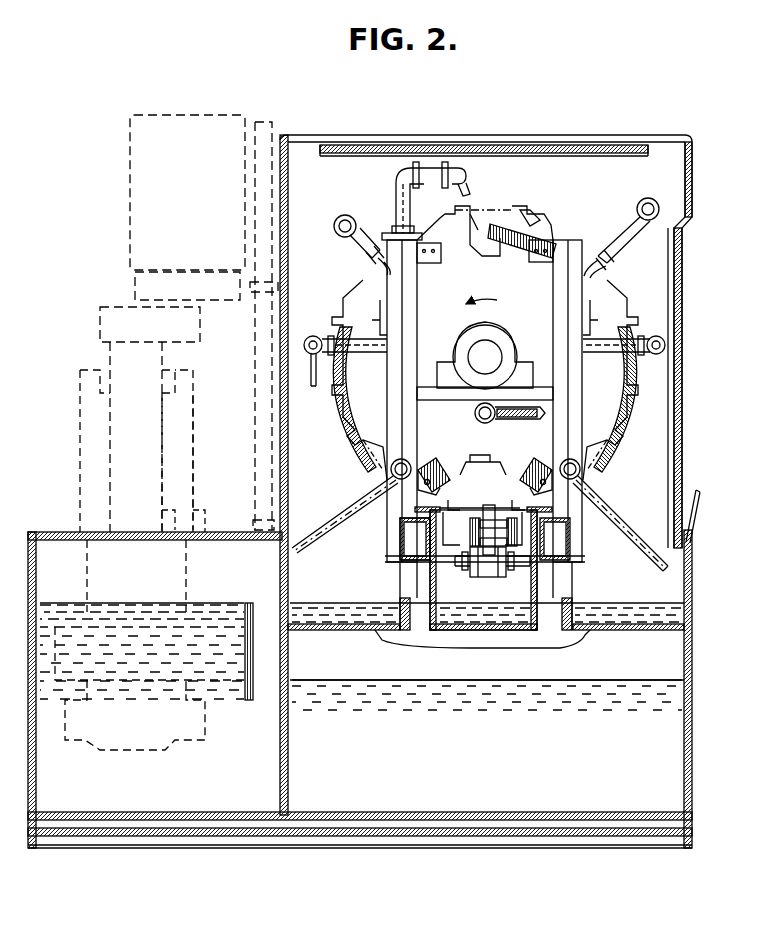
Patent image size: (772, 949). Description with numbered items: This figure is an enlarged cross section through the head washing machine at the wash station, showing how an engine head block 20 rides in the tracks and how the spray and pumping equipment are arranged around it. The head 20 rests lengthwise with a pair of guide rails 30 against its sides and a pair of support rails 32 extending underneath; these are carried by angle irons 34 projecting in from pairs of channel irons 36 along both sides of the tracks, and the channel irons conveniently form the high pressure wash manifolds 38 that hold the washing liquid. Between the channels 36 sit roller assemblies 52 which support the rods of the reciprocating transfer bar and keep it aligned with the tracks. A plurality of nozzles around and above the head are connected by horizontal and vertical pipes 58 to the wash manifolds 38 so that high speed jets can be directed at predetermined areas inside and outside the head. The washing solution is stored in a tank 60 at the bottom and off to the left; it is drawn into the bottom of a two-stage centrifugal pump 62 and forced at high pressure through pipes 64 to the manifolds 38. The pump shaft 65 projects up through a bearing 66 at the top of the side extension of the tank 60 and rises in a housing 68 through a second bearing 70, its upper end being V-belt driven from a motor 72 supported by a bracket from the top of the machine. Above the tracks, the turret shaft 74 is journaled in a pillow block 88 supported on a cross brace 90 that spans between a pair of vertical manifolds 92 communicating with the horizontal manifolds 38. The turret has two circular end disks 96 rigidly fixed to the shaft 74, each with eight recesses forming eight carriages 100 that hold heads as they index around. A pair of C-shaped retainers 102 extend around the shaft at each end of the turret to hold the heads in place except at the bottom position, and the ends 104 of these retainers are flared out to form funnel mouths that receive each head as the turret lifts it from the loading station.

The engine head block 20 is at (481, 470).
The guide rails 30 is at (458, 503).
The support rails 32 is at (487, 530).
The angle irons 34 is at (488, 536).
The channel irons 36 is at (430, 570).
The wash manifolds 38 is at (426, 548).
The roller assemblies 52 is at (486, 578).
The horizontal and vertical pipes 58 is at (584, 471).
The tank 60 is at (183, 786).
The two-stage centrifugal pump 62 is at (205, 731).
The pipes 64 is at (368, 676).
The pump shaft 65 is at (165, 422).
The bearing 66 is at (176, 515).
The housing 68 is at (194, 460).
The second bearing 70 is at (190, 376).
The motor 72 is at (129, 170).
The shaft 74 is at (493, 352).
The pillow block 88 is at (446, 364).
The cross brace 90 is at (459, 393).
The vertical manifolds 92 is at (414, 308).
The end disks 96 is at (430, 224).
The carriages 100 is at (487, 210).
The C-shaped retainers 102 is at (612, 294).
The ends of the C-shaped retainers 104 is at (440, 474).